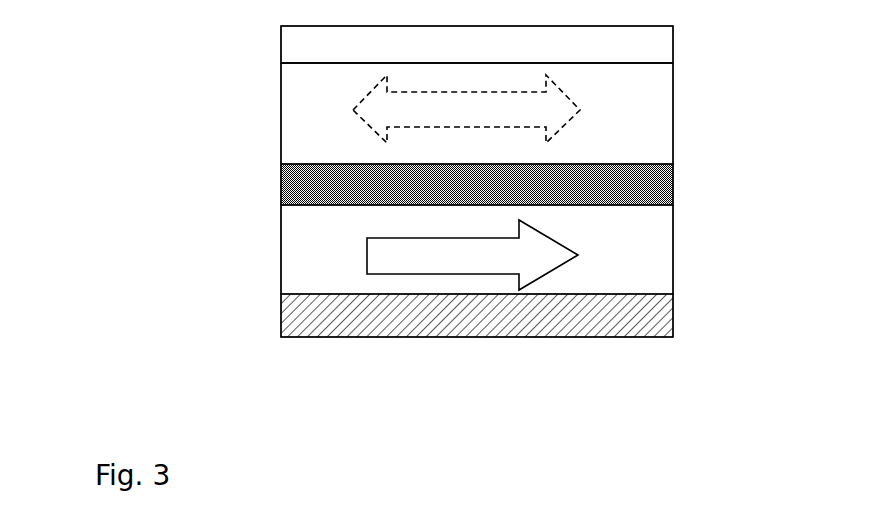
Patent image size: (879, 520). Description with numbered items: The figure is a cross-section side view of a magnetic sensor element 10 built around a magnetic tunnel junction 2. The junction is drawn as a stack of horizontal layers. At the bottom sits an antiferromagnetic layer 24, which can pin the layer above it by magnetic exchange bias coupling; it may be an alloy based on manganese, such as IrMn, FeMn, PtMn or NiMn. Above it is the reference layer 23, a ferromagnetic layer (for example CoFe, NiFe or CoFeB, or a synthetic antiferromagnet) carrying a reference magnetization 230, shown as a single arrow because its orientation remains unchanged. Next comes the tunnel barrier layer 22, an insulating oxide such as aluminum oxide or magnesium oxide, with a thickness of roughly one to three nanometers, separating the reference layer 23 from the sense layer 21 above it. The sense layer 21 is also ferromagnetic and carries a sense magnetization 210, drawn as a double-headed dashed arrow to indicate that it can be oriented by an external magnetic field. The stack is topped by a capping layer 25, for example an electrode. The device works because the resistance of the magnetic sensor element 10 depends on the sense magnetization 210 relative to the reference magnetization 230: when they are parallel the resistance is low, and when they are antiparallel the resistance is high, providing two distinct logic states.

The magnetic sensor element 10 is at (115, 324).
The magnetic tunnel junction 2 is at (796, 66).
The capping layer 25 is at (292, 43).
The sense layer 21 is at (667, 118).
The sense magnetization 210 is at (466, 109).
The tunnel barrier layer 22 is at (293, 188).
The reference layer 23 is at (667, 252).
The reference magnetization 230 is at (472, 255).
The antiferromagnetic layer 24 is at (667, 317).